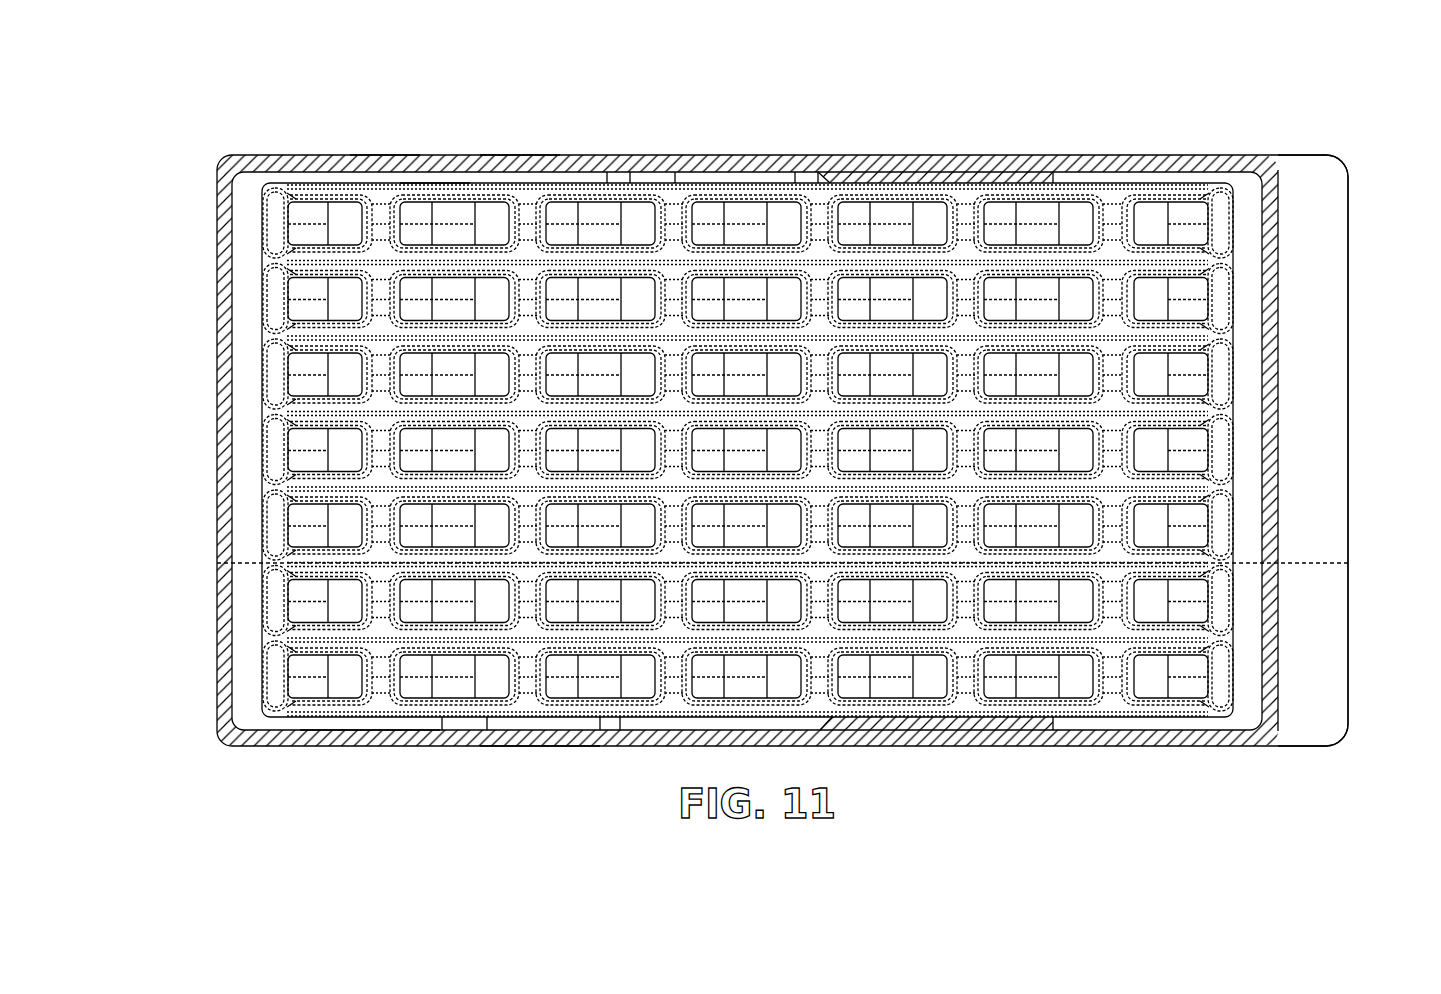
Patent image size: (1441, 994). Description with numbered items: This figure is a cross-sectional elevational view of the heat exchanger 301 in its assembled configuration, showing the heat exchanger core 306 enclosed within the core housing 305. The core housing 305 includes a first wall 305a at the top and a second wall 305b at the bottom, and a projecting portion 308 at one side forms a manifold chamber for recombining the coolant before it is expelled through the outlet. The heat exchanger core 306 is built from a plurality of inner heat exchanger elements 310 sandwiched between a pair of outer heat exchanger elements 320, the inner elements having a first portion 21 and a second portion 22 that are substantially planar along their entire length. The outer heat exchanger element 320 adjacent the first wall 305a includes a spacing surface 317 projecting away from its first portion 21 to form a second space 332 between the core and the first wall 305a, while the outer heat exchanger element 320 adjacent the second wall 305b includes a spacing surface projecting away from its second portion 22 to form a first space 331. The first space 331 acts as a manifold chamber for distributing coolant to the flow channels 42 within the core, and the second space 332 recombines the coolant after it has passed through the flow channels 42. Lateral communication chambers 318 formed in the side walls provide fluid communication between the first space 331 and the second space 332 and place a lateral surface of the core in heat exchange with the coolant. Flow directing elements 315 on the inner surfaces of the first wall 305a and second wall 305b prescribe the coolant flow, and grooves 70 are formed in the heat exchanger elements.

The heat exchanger 301 is at (246, 61).
The heat exchanger core 306 is at (245, 195).
The core housing 305 is at (257, 157).
The first wall 305a is at (522, 155).
The second wall 305b is at (522, 746).
The projecting portion 308 is at (1313, 175).
The spacing surface 317 is at (385, 155).
The first portion 21 is at (432, 183).
The second space 332 is at (592, 183).
The first space 331 is at (600, 725).
The second portion 22 is at (355, 730).
The lateral communication chamber 318 is at (243, 385).
The flow directing element 315 is at (1010, 183).
The flow channel 42 is at (820, 203).
The outer heat exchanger element 320 is at (1238, 226).
The inner heat exchanger element 310 is at (1238, 300).
The groove 70 is at (318, 414).